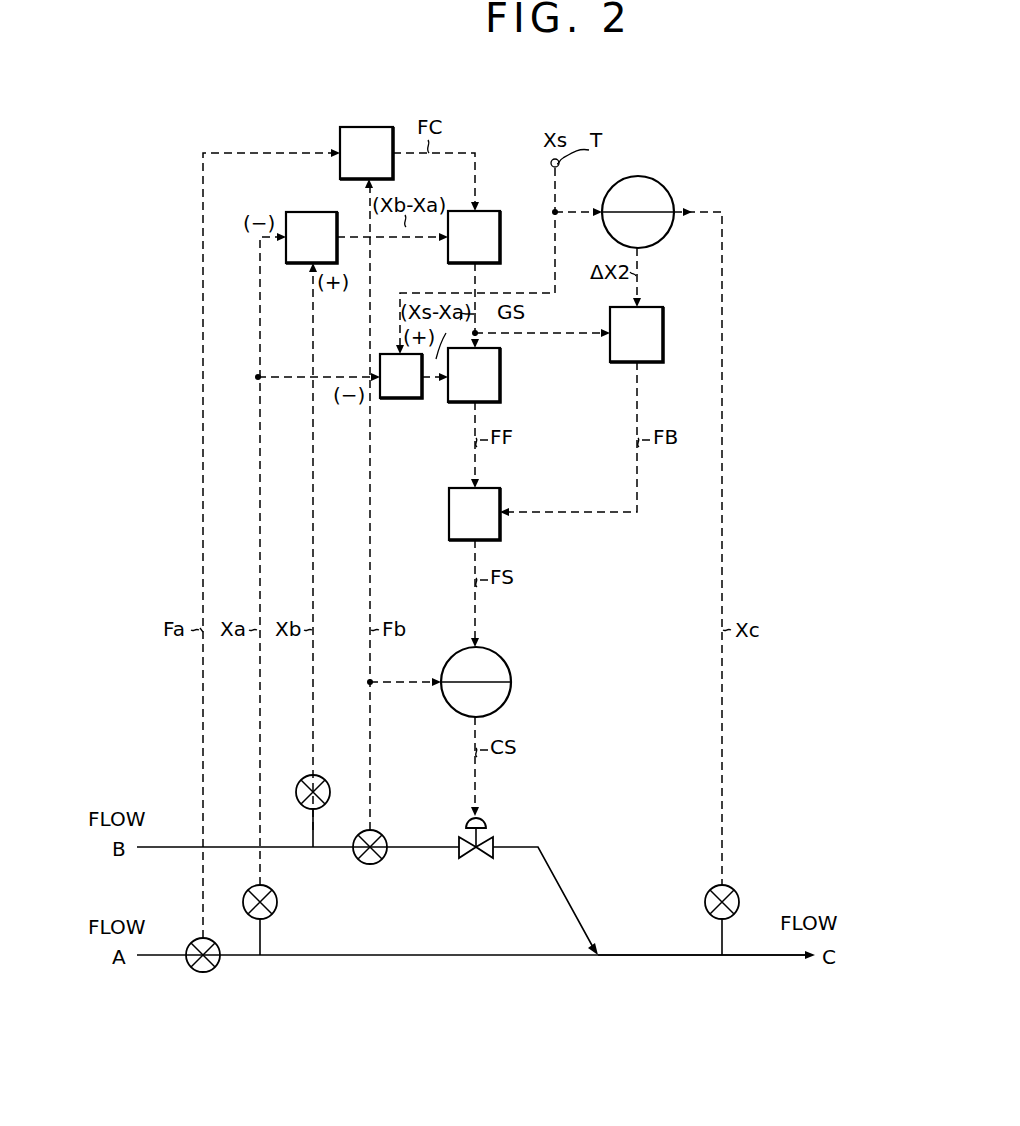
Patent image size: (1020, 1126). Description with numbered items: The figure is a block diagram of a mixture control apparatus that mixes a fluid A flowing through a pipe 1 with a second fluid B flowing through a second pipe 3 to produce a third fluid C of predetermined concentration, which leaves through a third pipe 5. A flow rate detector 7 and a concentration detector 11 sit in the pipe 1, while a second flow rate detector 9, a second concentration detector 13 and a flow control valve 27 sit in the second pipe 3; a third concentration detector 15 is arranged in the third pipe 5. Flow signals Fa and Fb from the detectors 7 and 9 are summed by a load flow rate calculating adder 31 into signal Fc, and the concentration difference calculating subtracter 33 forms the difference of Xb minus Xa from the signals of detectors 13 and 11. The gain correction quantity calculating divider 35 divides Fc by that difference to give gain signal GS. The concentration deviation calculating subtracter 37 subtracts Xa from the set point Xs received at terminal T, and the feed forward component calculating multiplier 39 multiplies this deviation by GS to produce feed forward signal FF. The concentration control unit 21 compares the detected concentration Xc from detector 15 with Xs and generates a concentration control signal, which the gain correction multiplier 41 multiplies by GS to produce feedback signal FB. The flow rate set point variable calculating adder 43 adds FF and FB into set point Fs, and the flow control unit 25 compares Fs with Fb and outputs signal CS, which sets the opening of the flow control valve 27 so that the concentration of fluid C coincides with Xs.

The pipe 1 is at (432, 957).
The second pipe 3 is at (328, 849).
The third pipe 5 is at (675, 957).
The flow rate detector 7 is at (215, 967).
The second flow rate detector 9 is at (382, 859).
The concentration detector 11 is at (276, 908).
The second concentration detector 13 is at (325, 780).
The third concentration detector 15 is at (738, 896).
The concentration control unit 21 is at (657, 180).
The flow control unit 25 is at (502, 657).
The flow control valve 27 is at (478, 858).
The load flow rate calculating adder 31 is at (366, 127).
The concentration difference calculating subtracter 33 is at (308, 212).
The gain correction quantity calculating divider 35 is at (490, 211).
The concentration deviation calculating subtracter 37 is at (404, 398).
The feed forward component calculating multiplier 39 is at (500, 377).
The gain correction multiplier 41 is at (653, 307).
The flow rate set point variable calculating adder 43 is at (500, 503).